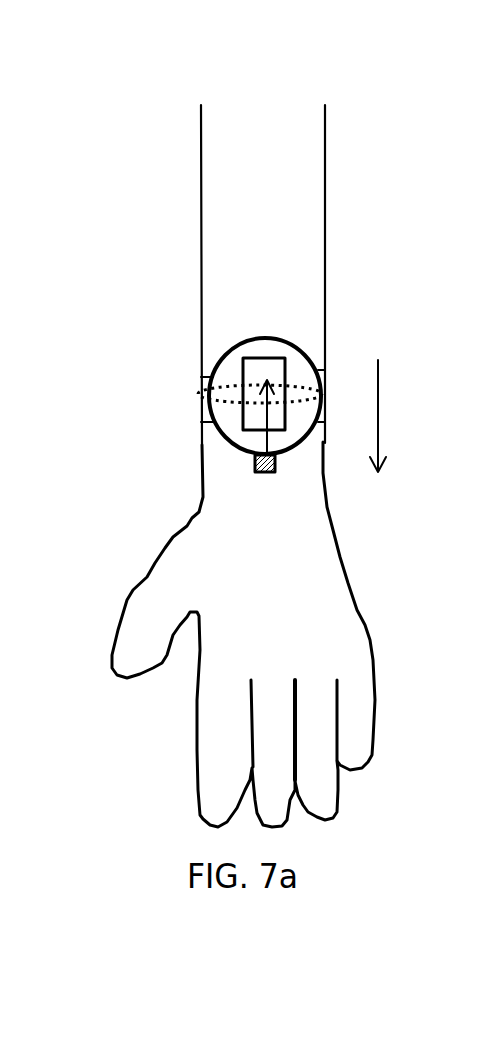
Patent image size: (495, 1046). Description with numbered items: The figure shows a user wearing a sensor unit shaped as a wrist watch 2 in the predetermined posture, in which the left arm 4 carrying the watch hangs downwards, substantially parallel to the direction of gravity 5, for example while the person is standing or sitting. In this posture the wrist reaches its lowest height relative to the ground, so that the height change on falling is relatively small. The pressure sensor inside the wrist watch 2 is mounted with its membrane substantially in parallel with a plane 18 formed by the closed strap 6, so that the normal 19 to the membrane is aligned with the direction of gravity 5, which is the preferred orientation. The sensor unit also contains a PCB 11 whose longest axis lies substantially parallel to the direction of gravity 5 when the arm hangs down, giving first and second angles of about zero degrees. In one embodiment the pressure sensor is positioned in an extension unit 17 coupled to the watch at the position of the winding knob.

The wrist watch 2 is at (303, 352).
The left arm 4 is at (315, 127).
The direction of gravity 5 is at (382, 405).
The closed strap 6 is at (200, 410).
The PCB 11 is at (265, 358).
The extension unit 17 is at (262, 472).
The plane 18 is at (233, 385).
The normal 19 is at (262, 382).